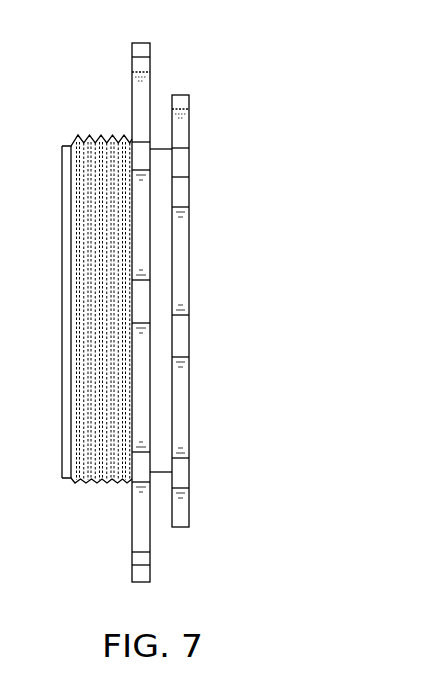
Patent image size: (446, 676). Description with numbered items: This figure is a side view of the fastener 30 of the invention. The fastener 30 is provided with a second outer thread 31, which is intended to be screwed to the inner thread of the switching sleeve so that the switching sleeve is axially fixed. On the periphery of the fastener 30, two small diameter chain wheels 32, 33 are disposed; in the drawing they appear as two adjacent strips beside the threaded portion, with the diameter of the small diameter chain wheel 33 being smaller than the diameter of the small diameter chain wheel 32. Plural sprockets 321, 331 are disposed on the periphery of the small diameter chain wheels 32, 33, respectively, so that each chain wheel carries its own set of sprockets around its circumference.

The fastener 30 is at (205, 302).
The second outer thread 31 is at (93, 135).
The small diameter chain wheel 32 is at (136, 302).
The sprockets 321 is at (137, 63).
The small diameter chain wheel 33 is at (221, 294).
The sprockets 331 is at (183, 102).